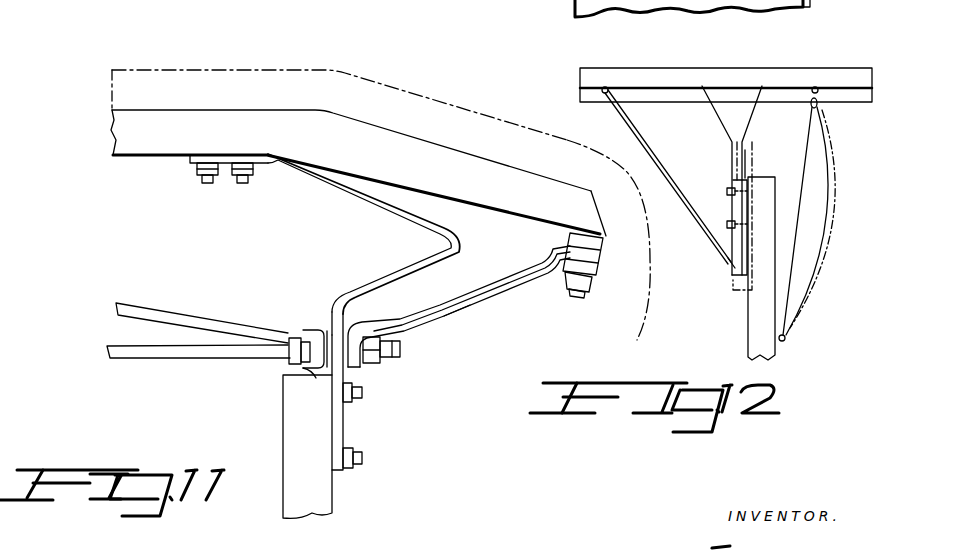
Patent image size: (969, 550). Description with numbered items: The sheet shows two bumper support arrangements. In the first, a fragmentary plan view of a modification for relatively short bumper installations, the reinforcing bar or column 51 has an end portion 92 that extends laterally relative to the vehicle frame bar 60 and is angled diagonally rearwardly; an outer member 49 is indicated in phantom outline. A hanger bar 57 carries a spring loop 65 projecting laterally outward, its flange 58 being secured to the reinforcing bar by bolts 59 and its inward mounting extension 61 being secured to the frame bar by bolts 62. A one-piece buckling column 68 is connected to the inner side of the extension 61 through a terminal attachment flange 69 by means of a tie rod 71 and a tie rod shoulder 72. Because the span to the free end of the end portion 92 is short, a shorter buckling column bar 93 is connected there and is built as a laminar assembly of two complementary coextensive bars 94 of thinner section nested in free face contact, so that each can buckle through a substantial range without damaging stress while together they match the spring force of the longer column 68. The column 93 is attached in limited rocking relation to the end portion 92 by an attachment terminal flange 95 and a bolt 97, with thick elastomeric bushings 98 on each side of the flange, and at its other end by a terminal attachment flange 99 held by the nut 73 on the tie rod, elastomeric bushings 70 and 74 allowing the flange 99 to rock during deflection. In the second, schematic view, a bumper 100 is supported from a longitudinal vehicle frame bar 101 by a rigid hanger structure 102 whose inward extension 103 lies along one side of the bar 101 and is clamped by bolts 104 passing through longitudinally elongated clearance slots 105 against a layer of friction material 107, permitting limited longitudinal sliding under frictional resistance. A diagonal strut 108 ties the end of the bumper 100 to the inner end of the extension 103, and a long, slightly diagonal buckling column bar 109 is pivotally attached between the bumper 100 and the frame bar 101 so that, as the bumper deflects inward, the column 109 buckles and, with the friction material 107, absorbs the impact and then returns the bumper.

In FIG. 11, the frame member (phantom) 49 is at (270, 68).
In FIG. 11, the reinforcing bar or column 51 is at (207, 97).
In FIG. 11, the flange 58 is at (227, 157).
In FIG. 11, the bolts 59 is at (240, 186).
In FIG. 11, the end portion 92 is at (443, 177).
In FIG. 11, the spring loop 65 is at (447, 241).
In FIG. 11, the hanger bar 57 is at (328, 298).
In FIG. 11, the inward mounting extension 61 is at (337, 422).
In FIG. 11, the elastomeric bushing 70 is at (352, 337).
In FIG. 11, the elastomeric bushing 74 is at (398, 296).
In FIG. 11, the complementary coextensive bars 94 is at (526, 292).
In FIG. 11, the buckling column bar 93 is at (493, 297).
In FIG. 11, the nut 73 is at (398, 337).
In FIG. 11, the terminal attachment flange 99 is at (356, 367).
In FIG. 11, the bolts 62 is at (355, 392).
In FIG. 11, the vehicle frame bar 60 is at (294, 437).
In FIG. 11, the tie rod shoulder 72 is at (297, 330).
In FIG. 11, the terminal attachment flange 69 is at (317, 372).
In FIG. 11, the tie rod 71 is at (215, 352).
In FIG. 11, the buckling column 68 is at (185, 278).
In FIG. 11, the elastomeric bearing washers or bushings 98 is at (568, 235).
In FIG. 11, the attachment terminal flange 95 is at (593, 278).
In FIG. 11, the bolt 97 is at (577, 294).
In FIG. 12, the bumper 100 is at (858, 99).
In FIG. 12, the diagonal strut 108 is at (632, 130).
In FIG. 12, the rigid hanger structure 102 is at (740, 112).
In FIG. 12, the inward extension 103 is at (741, 214).
In FIG. 12, the bolts 104 is at (731, 190).
In FIG. 12, the longitudinally elongated clearance slots 105 is at (751, 148).
In FIG. 12, the longitudinal vehicle frame bar 101 is at (758, 330).
In FIG. 12, the friction material 107 is at (730, 266).
In FIG. 12, the buckling column bar 109 is at (800, 224).